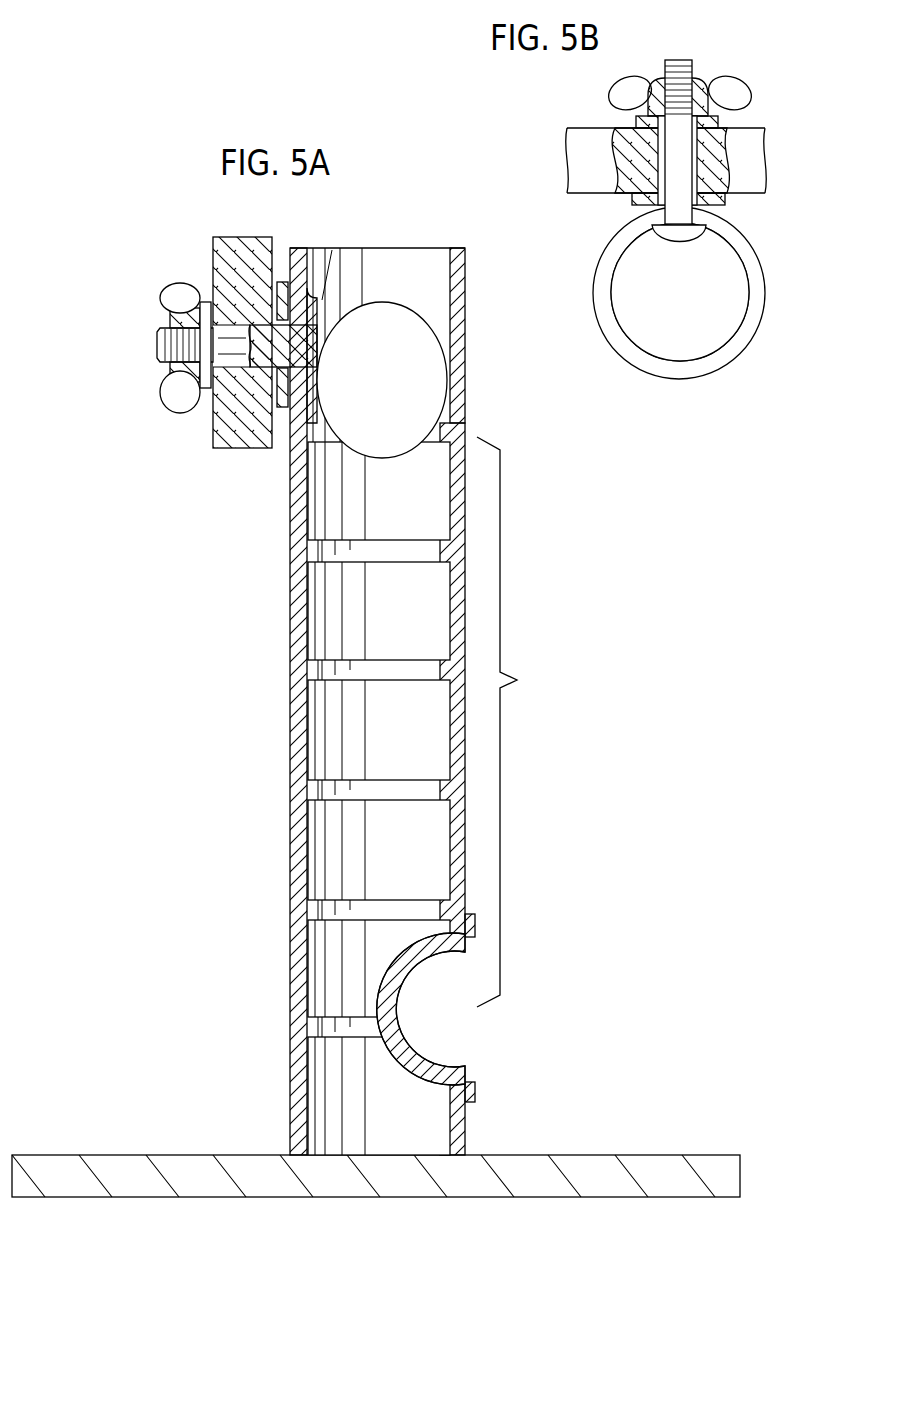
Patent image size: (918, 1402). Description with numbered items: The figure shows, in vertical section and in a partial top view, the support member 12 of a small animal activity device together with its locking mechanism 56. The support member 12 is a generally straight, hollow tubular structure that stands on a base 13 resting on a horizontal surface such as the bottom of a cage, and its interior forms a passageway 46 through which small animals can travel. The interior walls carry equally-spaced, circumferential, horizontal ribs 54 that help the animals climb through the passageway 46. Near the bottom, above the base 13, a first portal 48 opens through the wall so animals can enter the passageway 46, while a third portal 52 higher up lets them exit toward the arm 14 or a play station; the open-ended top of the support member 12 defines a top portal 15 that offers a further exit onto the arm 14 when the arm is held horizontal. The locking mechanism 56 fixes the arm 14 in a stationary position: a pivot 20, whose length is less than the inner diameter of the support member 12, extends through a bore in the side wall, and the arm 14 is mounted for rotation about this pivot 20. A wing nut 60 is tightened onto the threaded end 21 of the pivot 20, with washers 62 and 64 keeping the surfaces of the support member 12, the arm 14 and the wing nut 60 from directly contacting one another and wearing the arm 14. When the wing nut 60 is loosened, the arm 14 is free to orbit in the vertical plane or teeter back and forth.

In FIG. 5A, the support member 12 is at (375, 769).
In FIG. 5B, the support member 12 is at (747, 318).
In FIG. 5A, the base 13 is at (742, 1178).
In FIG. 5A, the arm 14 is at (213, 438).
In FIG. 5B, the arm 14 is at (583, 155).
In FIG. 5A, the top portal 15 is at (332, 250).
In FIG. 5B, the top portal 15 is at (705, 333).
In FIG. 5A, the pivot 20 is at (320, 305).
In FIG. 5B, the pivot 20 is at (680, 240).
In FIG. 5A, the threaded end 21 is at (160, 345).
In FIG. 5B, the threaded end 21 is at (697, 75).
In FIG. 5A, the passageway 46 is at (387, 1130).
In FIG. 5A, the first portal 48 is at (420, 1030).
In FIG. 5A, the third portal 52 is at (452, 345).
In FIG. 5A, the ribs 54 is at (520, 722).
In FIG. 5A, the locking mechanism 56 is at (138, 366).
In FIG. 5B, the locking mechanism 56 is at (748, 110).
In FIG. 5A, the wing nut 60 is at (170, 295).
In FIG. 5B, the wing nut 60 is at (680, 93).
In FIG. 5A, the washer 62 is at (200, 390).
In FIG. 5B, the washer 62 is at (643, 122).
In FIG. 5A, the washer 64 is at (283, 280).
In FIG. 5B, the washer 64 is at (632, 203).